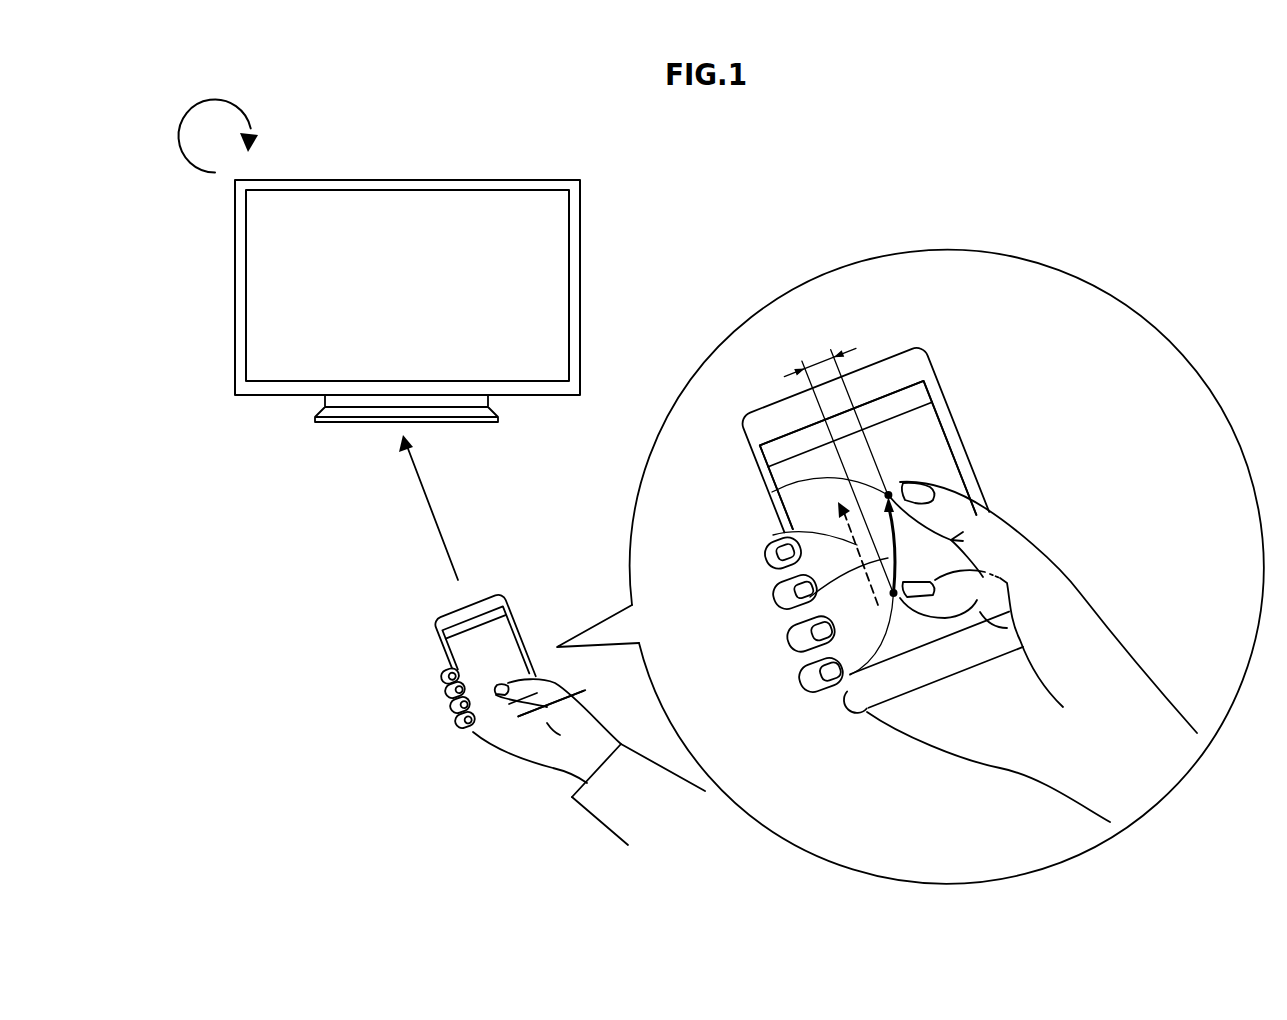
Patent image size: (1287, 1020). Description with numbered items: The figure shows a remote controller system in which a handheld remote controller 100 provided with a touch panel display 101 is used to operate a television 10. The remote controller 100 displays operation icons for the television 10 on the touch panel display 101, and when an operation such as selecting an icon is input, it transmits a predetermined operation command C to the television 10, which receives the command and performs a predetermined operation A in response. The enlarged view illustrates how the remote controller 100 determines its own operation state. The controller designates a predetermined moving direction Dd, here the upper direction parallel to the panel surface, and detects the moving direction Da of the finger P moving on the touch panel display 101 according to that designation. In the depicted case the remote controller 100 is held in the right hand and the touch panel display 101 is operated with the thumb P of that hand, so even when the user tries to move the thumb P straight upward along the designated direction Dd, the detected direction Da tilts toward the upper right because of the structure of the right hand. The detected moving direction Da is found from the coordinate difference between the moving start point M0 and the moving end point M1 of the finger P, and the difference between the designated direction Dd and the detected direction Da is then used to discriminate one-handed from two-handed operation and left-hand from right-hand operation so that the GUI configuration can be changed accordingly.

The television 10 is at (505, 177).
The remote controller 100 is at (432, 620).
The touch panel display 101 is at (933, 435).
The predetermined operation A is at (238, 106).
The operation command C is at (435, 515).
The finger (thumb) P is at (1027, 528).
The moving start point M0 is at (847, 697).
The moving end point M1 is at (772, 492).
The designated moving direction Dd is at (773, 536).
The detected moving direction Da is at (810, 597).